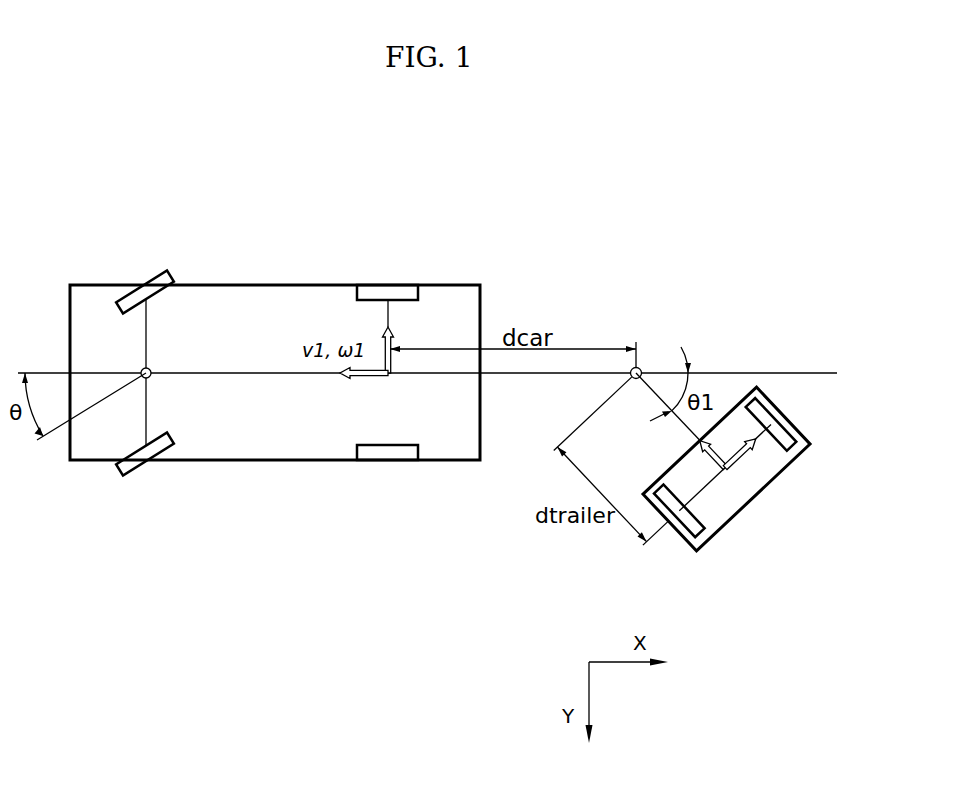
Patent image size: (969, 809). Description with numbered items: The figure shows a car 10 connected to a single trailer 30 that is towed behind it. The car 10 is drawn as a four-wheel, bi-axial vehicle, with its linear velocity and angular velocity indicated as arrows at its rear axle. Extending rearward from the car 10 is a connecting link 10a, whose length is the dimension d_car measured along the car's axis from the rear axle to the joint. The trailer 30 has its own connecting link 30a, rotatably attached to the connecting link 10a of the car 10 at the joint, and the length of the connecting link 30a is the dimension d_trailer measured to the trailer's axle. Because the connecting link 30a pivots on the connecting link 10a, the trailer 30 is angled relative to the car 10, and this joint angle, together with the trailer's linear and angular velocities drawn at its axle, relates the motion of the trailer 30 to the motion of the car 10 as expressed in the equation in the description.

The car 10 is at (292, 285).
The connecting link of the car 10a is at (573, 372).
The connecting link of the trailer 30a is at (660, 398).
The trailer 30 is at (776, 413).